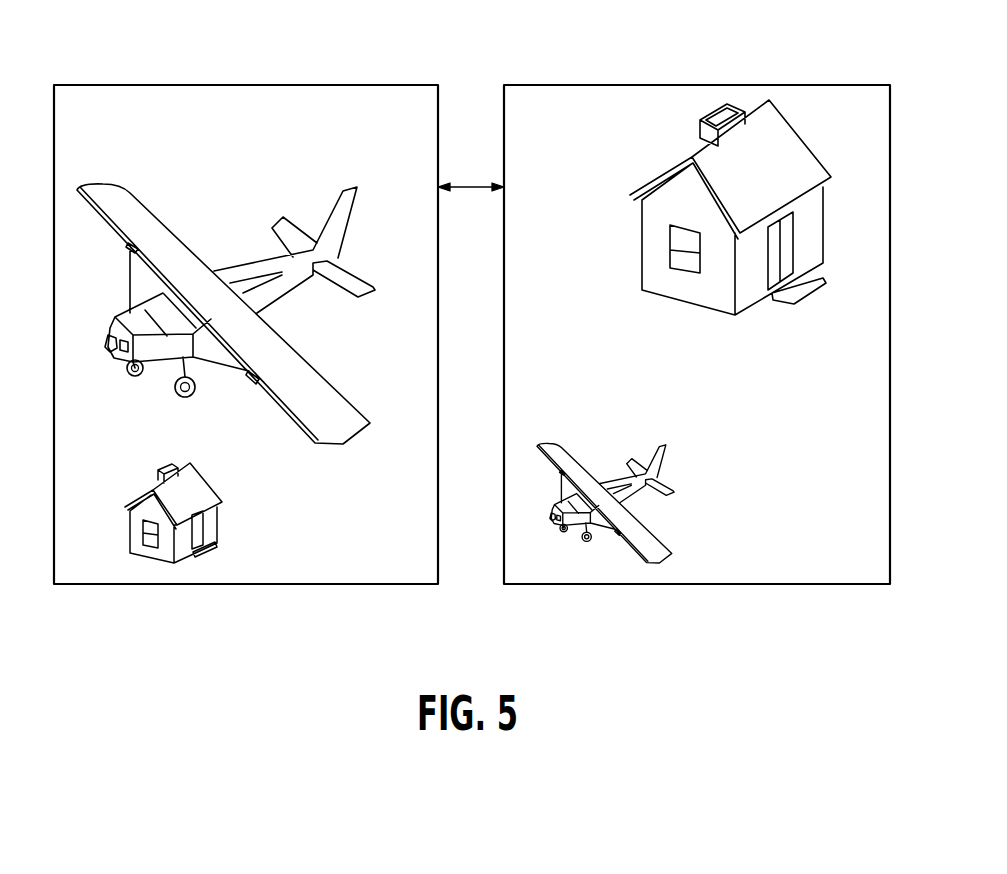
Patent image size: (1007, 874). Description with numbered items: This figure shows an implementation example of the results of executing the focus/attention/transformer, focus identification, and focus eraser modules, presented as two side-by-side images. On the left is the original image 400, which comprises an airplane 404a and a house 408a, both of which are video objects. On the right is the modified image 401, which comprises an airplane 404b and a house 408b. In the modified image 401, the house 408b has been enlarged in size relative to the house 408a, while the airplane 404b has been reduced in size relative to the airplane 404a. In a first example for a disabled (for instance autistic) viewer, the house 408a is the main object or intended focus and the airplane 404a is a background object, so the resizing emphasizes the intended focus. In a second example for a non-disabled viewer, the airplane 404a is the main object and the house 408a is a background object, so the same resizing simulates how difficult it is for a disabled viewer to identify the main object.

The original image 400 is at (353, 84).
The modified image 401 is at (775, 84).
The airplane 404a is at (187, 258).
The airplane 404b is at (578, 470).
The house 408a is at (214, 520).
The house 408b is at (656, 255).